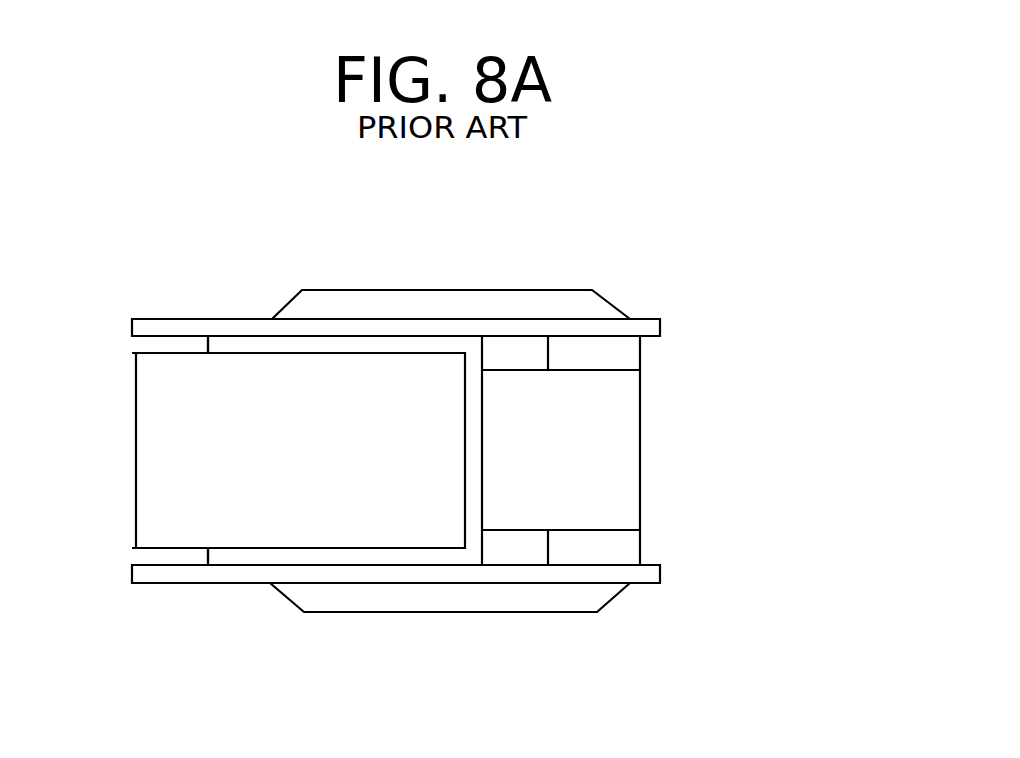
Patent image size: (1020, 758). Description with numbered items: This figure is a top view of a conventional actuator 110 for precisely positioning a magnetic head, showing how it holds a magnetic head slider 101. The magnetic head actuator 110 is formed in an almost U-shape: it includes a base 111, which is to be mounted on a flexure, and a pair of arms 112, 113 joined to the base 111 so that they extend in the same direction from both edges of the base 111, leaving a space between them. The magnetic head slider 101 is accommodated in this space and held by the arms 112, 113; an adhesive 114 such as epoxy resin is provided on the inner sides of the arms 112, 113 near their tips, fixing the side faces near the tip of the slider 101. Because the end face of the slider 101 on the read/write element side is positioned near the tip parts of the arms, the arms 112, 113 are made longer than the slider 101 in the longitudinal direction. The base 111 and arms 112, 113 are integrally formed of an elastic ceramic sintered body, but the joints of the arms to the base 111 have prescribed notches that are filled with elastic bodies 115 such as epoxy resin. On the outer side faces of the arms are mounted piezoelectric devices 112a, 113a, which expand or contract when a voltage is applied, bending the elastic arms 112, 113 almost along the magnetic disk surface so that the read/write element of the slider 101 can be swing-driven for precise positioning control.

The magnetic head actuator 110 is at (580, 272).
The magnetic head slider 101 is at (133, 511).
The base 111 is at (642, 428).
The arm 112 is at (200, 318).
The piezoelectric device 112a is at (330, 290).
The arm 113 is at (218, 583).
The piezoelectric device 113a is at (531, 612).
The adhesive 114 is at (132, 348).
The elastic body 115 is at (523, 348).